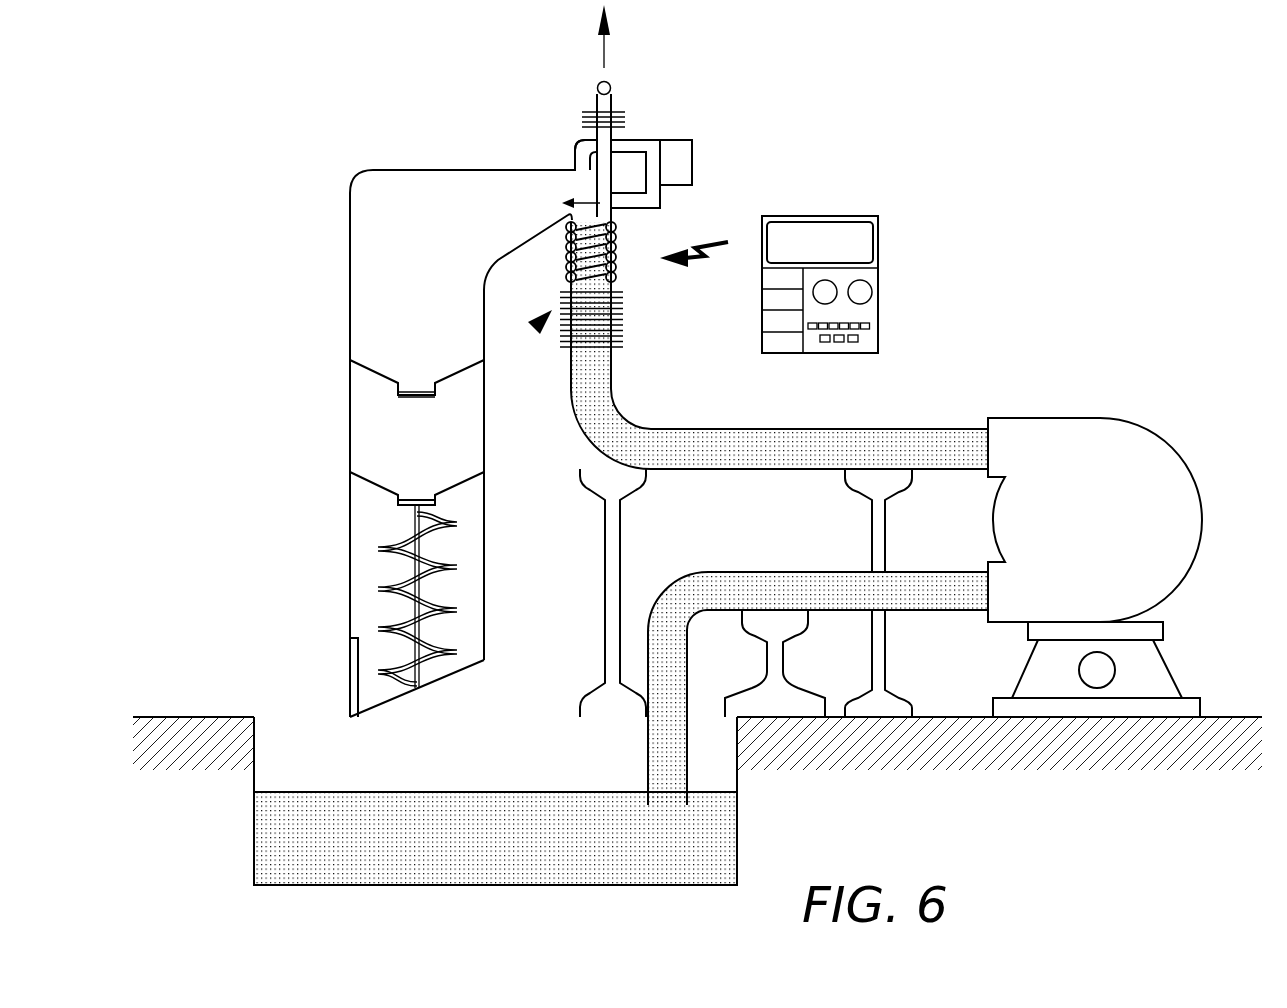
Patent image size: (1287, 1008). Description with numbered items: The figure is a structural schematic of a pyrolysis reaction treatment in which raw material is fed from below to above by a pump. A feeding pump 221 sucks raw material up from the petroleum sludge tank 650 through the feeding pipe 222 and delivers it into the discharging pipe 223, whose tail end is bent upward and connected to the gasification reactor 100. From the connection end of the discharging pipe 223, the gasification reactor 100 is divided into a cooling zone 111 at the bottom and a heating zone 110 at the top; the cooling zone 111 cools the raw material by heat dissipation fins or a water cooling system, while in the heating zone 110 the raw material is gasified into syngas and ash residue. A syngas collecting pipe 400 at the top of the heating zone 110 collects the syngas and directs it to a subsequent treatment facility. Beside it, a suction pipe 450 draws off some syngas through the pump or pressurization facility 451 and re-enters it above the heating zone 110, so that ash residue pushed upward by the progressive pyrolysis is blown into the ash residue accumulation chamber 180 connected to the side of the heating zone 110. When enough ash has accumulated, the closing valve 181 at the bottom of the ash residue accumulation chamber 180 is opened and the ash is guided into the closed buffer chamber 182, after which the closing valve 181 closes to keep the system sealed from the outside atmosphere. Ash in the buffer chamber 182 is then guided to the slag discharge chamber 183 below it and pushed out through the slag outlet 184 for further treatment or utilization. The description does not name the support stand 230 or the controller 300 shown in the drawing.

The gasification reactor 100 is at (530, 333).
The heating zone 110 is at (613, 228).
The cooling zone 111 is at (616, 349).
The ash residue accumulation chamber 180 is at (360, 270).
The closing valve 181 is at (425, 398).
The buffer chamber 182 is at (357, 430).
The slag discharge chamber 183 is at (357, 547).
The slag outlet 184 is at (352, 680).
The feeding pump 221 is at (1158, 455).
The feeding pipe 222 is at (727, 585).
The discharging pipe 223 is at (930, 442).
The support stand 230 is at (612, 550).
The controller 300 is at (848, 347).
The syngas collecting pipe 400 is at (607, 85).
The suction pipe 450 is at (576, 137).
The pump or pressurization facility 451 is at (687, 139).
The petroleum sludge tank 650 is at (445, 798).